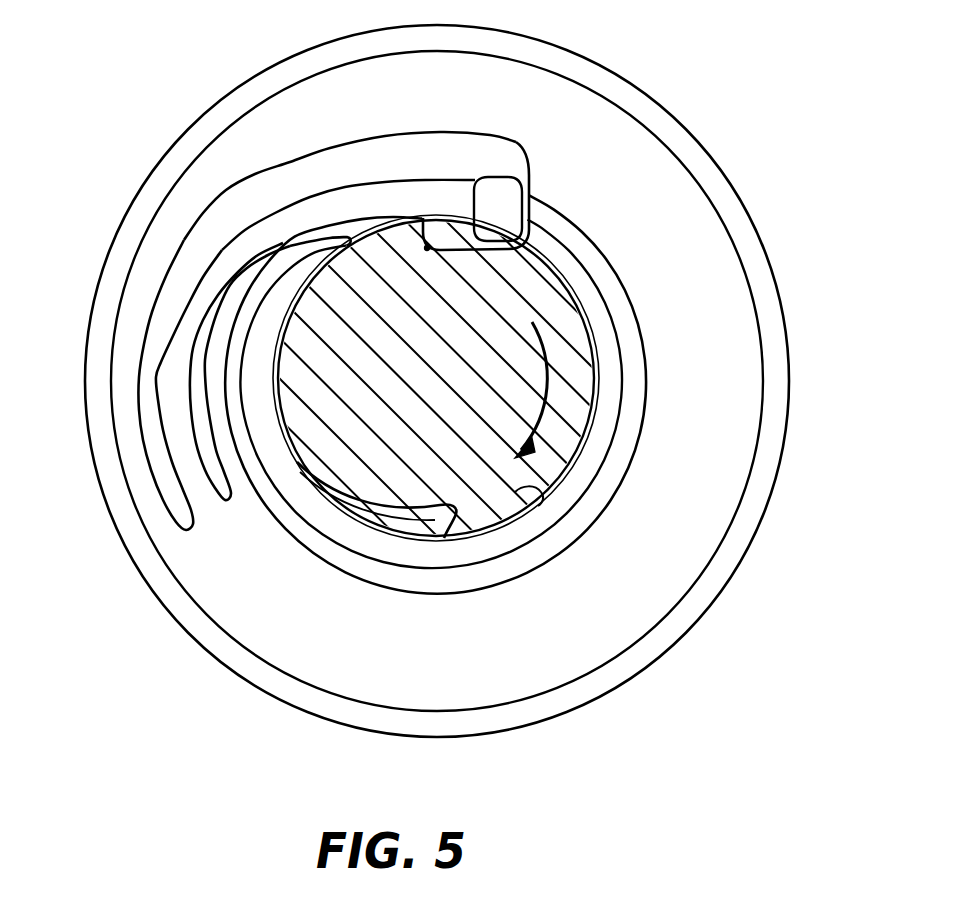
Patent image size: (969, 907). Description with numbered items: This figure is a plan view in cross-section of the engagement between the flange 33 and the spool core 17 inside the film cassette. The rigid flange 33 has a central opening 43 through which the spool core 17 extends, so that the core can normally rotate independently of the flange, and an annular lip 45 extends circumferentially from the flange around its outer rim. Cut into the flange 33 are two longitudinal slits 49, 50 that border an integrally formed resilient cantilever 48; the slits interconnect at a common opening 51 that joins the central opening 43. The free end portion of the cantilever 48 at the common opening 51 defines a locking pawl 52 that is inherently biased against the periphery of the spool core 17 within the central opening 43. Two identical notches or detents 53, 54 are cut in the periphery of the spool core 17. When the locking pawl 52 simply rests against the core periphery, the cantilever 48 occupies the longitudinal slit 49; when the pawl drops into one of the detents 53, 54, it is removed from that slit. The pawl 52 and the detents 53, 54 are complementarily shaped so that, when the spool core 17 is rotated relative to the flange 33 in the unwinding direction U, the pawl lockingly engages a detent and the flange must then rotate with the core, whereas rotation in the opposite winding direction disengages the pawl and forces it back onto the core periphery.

The annular lip 45 is at (672, 110).
The flange 33 is at (700, 232).
The spool core 17 is at (520, 483).
The central opening 43 is at (597, 378).
The film unwinding direction U is at (583, 480).
The resilient cantilever 48 is at (285, 216).
The longitudinal slit 49 is at (188, 258).
The longitudinal slit 50 is at (190, 380).
The common opening 51 is at (526, 200).
The locking pawl 52 is at (443, 237).
The detent 53 is at (428, 247).
The detent 54 is at (445, 506).